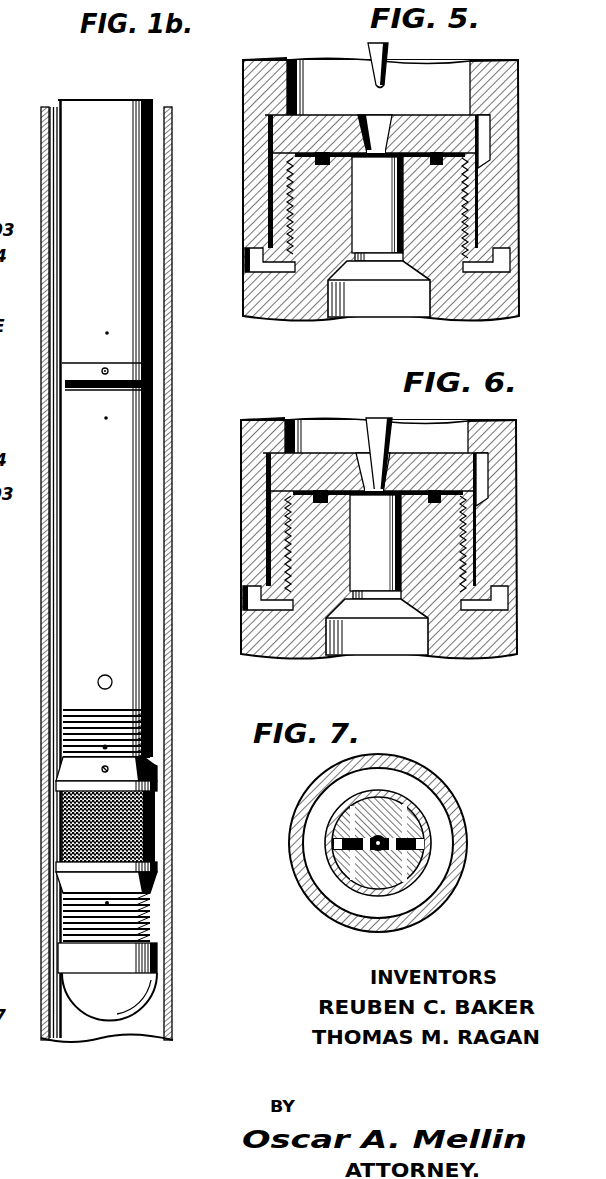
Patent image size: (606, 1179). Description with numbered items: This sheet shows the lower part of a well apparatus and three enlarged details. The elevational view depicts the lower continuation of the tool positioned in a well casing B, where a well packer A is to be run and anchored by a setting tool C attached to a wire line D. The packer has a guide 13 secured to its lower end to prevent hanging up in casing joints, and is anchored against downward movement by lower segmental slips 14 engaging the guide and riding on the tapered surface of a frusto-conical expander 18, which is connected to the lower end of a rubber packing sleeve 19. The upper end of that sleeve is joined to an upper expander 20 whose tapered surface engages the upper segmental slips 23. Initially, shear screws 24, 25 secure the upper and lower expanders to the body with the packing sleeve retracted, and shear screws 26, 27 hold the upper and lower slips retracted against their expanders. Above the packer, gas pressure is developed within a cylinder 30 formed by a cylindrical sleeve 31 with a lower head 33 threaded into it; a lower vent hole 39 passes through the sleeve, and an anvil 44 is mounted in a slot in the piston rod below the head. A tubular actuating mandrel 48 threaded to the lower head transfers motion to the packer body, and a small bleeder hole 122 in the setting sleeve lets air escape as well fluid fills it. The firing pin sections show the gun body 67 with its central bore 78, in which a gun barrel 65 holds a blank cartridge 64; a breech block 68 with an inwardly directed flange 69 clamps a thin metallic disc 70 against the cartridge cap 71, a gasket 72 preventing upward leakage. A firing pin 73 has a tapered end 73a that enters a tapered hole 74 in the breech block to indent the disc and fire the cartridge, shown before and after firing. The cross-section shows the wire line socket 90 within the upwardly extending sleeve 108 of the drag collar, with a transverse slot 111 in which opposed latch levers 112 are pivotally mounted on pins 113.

In FIG. 1B, the guide 13 is at (133, 1006).
In FIG. 1B, the lower segmental slips 14 is at (145, 921).
In FIG. 1B, the frusto-conical expander 18 is at (148, 885).
In FIG. 1B, the packing sleeve 19 is at (150, 846).
In FIG. 1B, the upper expander 20 is at (156, 787).
In FIG. 1B, the upper segmental slips 23 is at (148, 724).
In FIG. 1B, the shear screw 24 is at (103, 769).
In FIG. 1B, the shear screw 25 is at (105, 883).
In FIG. 1B, the shear screw 26 is at (105, 747).
In FIG. 1B, the shear screw 27 is at (107, 904).
In FIG. 1B, the cylinder 30 is at (150, 274).
In FIG. 1B, the cylindrical sleeve 31 is at (62, 287).
In FIG. 1B, the lower head 33 is at (63, 371).
In FIG. 1B, the lower vent hole 39 is at (107, 333).
In FIG. 1B, the anvil 44 is at (105, 391).
In FIG. 1B, the actuating mandrel 48 is at (65, 387).
In FIG. 1B, the bleeder hole 122 is at (106, 419).
In FIG. 1B, the well packer A is at (157, 823).
In FIG. 1B, the well casing B is at (167, 762).
In FIG. 7, the well casing B is at (443, 896).
In FIG. 1B, the setting tool C is at (157, 344).
In FIG. 7, the wire line D is at (387, 818).
In FIG. 5, the blank cartridge 64 is at (398, 208).
In FIG. 6, the blank cartridge 64 is at (398, 562).
In FIG. 5, the gun barrel 65 is at (417, 278).
In FIG. 6, the gun barrel 65 is at (304, 640).
In FIG. 5, the gun body 67 is at (472, 82).
In FIG. 6, the gun body 67 is at (497, 438).
In FIG. 5, the breech block 68 is at (488, 168).
In FIG. 6, the breech block 68 is at (268, 553).
In FIG. 5, the inwardly directed flange 69 is at (446, 125).
In FIG. 6, the inwardly directed flange 69 is at (433, 458).
In FIG. 5, the thin metallic disc 70 is at (322, 157).
In FIG. 6, the thin metallic disc 70 is at (310, 500).
In FIG. 5, the cartridge cap 71 is at (378, 152).
In FIG. 6, the cartridge cap 71 is at (360, 499).
In FIG. 5, the gasket 72 is at (397, 177).
In FIG. 6, the gasket 72 is at (432, 506).
In FIG. 5, the firing pin 73 is at (368, 47).
In FIG. 6, the firing pin 73 is at (378, 417).
In FIG. 5, the tapered end 73a is at (386, 79).
In FIG. 6, the tapered end 73a is at (388, 481).
In FIG. 5, the tapered hole 74 is at (375, 126).
In FIG. 6, the tapered hole 74 is at (370, 478).
In FIG. 5, the central bore 78 is at (292, 60).
In FIG. 6, the central bore 78 is at (296, 421).
In FIG. 7, the wire line socket 90 is at (374, 882).
In FIG. 7, the upwardly extending sleeve 108 is at (387, 815).
In FIG. 7, the transverse slot 111 is at (370, 808).
In FIG. 7, the latch levers 112 is at (436, 840).
In FIG. 7, the pins 113 is at (425, 868).